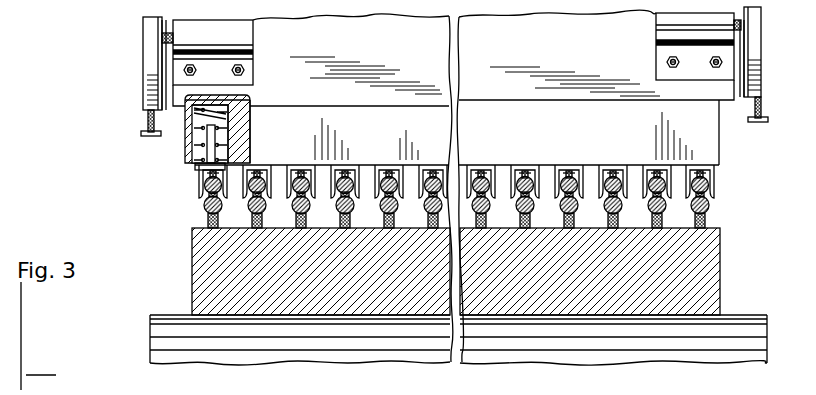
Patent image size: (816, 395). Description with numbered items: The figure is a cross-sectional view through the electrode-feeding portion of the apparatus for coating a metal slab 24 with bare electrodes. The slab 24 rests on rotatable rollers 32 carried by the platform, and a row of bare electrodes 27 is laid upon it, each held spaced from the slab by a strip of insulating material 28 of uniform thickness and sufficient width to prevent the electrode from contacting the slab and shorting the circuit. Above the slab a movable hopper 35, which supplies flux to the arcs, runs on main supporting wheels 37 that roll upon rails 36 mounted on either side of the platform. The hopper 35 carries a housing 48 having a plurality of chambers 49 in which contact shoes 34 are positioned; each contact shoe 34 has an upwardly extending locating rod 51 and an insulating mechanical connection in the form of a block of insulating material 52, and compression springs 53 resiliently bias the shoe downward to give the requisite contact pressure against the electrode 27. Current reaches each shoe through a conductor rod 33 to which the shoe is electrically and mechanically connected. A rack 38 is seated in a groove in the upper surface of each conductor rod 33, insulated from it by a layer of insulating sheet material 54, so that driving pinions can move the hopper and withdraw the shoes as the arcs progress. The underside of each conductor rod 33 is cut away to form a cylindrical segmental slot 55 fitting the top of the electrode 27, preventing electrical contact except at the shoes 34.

The slab 24 is at (722, 262).
The bare electrode 27 is at (618, 224).
The layer of insulating material 28 is at (305, 222).
The rotatable rollers 32 is at (182, 305).
The conductor 33 is at (205, 202).
The contact shoe 34 is at (206, 183).
The movable hopper 35 is at (385, 50).
The rail 36 is at (150, 122).
The main supporting wheel 37 is at (150, 38).
The rack 38 is at (224, 172).
The housing 48 is at (704, 142).
The chamber 49 is at (188, 150).
The locating rod 51 is at (250, 134).
The block of insulating material 52 is at (200, 160).
The compression spring 53 is at (250, 108).
The insulating sheet material 54 is at (204, 190).
The cylindrical segmental slot 55 is at (210, 222).